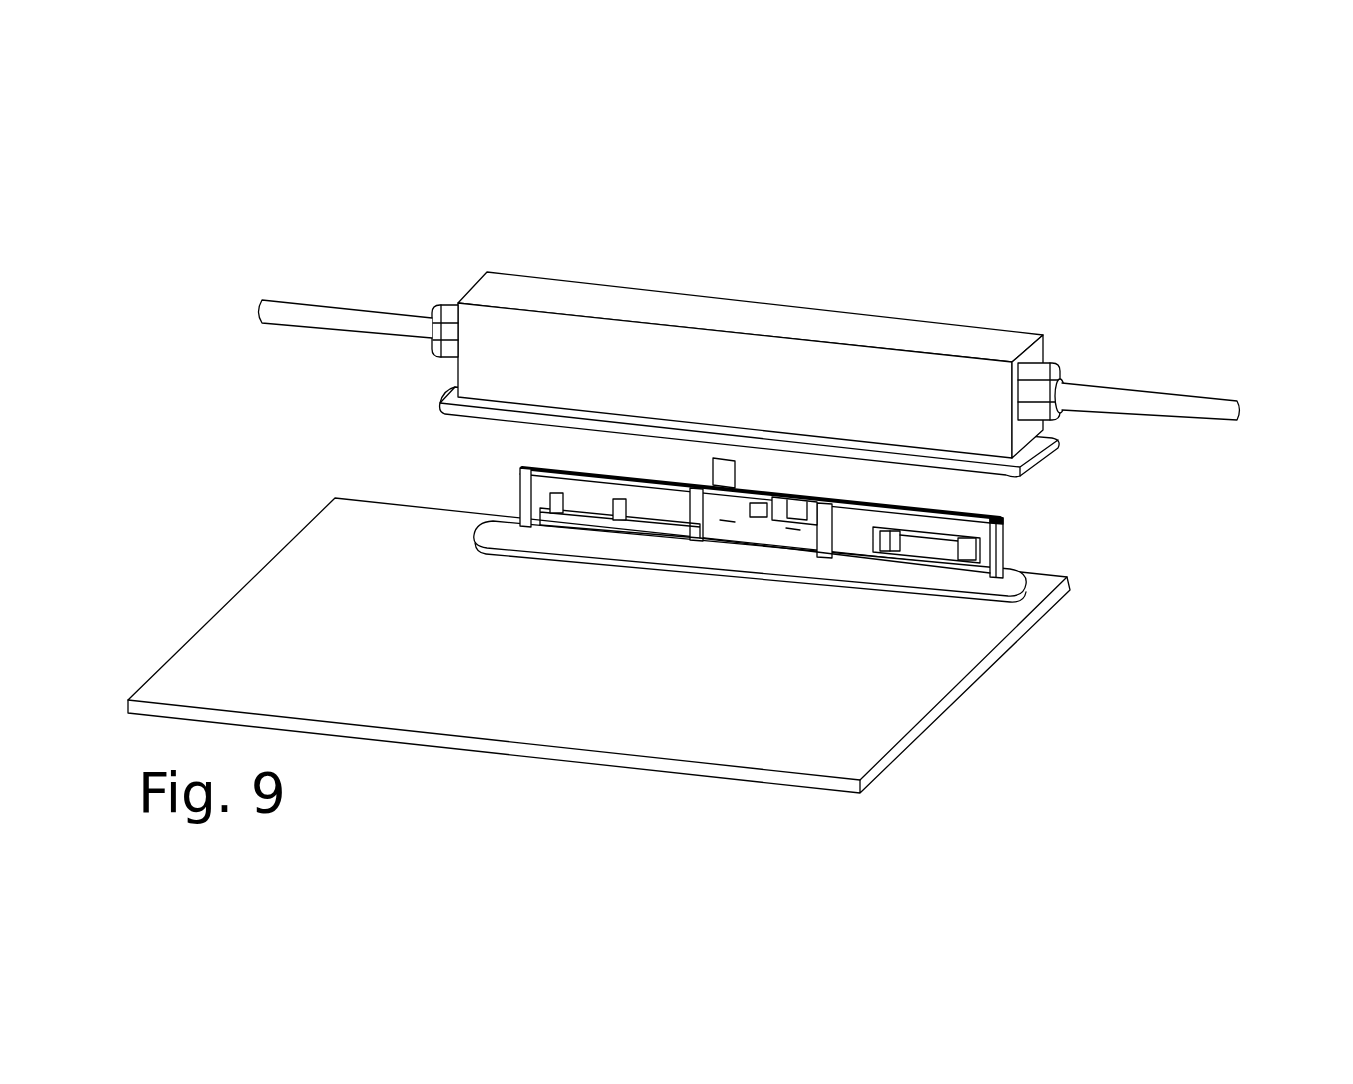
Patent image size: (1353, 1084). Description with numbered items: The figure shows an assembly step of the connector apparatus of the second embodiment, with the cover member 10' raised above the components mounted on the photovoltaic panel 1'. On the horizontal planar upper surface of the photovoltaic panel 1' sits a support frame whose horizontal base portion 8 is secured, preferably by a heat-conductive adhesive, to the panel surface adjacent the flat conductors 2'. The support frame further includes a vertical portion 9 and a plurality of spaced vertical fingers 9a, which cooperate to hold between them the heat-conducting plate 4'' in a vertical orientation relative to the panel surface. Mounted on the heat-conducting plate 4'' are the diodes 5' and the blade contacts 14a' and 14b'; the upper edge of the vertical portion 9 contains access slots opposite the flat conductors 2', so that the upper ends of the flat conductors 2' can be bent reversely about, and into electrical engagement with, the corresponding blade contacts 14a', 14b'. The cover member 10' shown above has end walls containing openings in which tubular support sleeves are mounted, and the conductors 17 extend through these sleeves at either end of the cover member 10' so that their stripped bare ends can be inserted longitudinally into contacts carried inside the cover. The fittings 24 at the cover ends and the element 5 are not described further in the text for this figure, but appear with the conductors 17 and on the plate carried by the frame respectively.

The photovoltaic panel 1' is at (599, 664).
The horizontal base portion 8 is at (1007, 580).
The heat-conducting plate 4'' is at (825, 504).
The vertical fingers 9a is at (695, 530).
The vertical portion 9 is at (988, 530).
The contact element 5 is at (926, 591).
The diodes 5' is at (794, 629).
The flat conductors 2' is at (857, 388).
The blade contact 14a' is at (727, 594).
The blade contact 14b' is at (812, 597).
The cover member 10' is at (750, 350).
The cable gland 24 is at (432, 348).
The conductors 17 is at (322, 312).